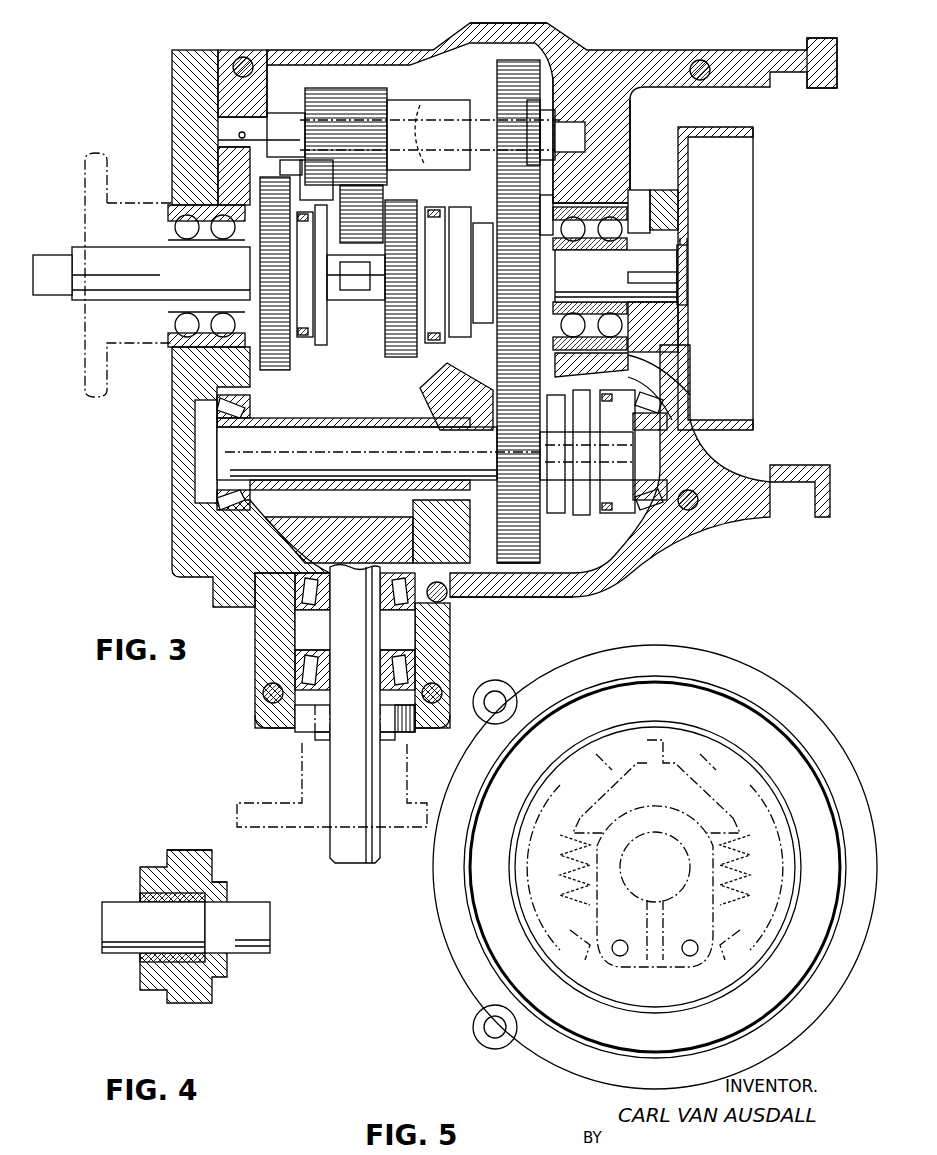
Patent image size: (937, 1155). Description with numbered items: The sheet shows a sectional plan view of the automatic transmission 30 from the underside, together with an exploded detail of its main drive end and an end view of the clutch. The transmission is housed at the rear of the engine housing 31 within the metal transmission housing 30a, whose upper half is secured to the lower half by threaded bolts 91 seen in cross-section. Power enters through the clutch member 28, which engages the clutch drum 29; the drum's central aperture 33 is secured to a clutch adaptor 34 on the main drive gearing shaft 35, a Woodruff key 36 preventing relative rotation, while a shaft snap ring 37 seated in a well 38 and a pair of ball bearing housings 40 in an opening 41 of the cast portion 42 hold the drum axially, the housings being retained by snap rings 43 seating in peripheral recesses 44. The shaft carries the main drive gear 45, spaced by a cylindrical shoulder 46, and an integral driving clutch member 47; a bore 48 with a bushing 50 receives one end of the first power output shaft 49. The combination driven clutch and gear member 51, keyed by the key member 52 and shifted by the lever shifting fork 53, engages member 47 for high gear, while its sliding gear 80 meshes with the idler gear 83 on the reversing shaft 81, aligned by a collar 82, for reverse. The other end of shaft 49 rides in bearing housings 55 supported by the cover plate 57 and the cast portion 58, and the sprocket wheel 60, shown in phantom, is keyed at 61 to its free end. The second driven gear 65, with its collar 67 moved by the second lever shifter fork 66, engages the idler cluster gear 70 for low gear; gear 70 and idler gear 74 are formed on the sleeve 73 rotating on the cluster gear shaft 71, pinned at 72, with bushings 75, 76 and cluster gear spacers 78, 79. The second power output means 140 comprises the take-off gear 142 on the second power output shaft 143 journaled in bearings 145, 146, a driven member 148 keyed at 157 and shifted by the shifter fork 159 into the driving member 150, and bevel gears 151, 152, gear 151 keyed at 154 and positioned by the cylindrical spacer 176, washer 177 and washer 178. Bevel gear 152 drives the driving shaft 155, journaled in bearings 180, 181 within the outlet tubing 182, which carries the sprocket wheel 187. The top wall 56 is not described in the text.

In FIG. 5, the clutch member 28 is at (612, 987).
In FIG. 3, the clutch drum 29 is at (738, 128).
In FIG. 5, the clutch drum 29 is at (545, 965).
In FIG. 3, the automatic transmission 30 is at (155, 574).
In FIG. 3, the transmission housing 30a is at (643, 40).
In FIG. 3, the engine housing 31 is at (820, 88).
In FIG. 3, the central aperture 33 is at (680, 322).
In FIG. 3, the clutch adaptor 34 is at (680, 366).
In FIG. 3, the main drive gearing shaft 35 is at (690, 270).
In FIG. 4, the main drive gearing shaft 35 is at (262, 918).
In FIG. 3, the Woodruff key 36 is at (690, 286).
In FIG. 3, the shaft snap ring 37 is at (690, 250).
In FIG. 3, the well 38 is at (688, 240).
In FIG. 3, the ball bearing housing 40 is at (622, 228).
In FIG. 3, the opening 41 is at (620, 362).
In FIG. 3, the cast portion 42 is at (630, 136).
In FIG. 3, the snap rings 43 is at (632, 200).
In FIG. 3, the peripheral recesses 44 is at (545, 205).
In FIG. 3, the main drive gear 45 is at (470, 215).
In FIG. 4, the main drive gear 45 is at (212, 870).
In FIG. 4, the cylindrical shoulder 46 is at (227, 885).
In FIG. 3, the driving clutch member 47 is at (478, 340).
In FIG. 4, the driving clutch member 47 is at (147, 865).
In FIG. 4, the bore 48 is at (140, 968).
In FIG. 3, the first power output shaft 49 is at (72, 250).
In FIG. 4, the first power output shaft 49 is at (102, 928).
In FIG. 4, the bushing 50 is at (140, 882).
In FIG. 3, the combination driven clutch and gear member 51 is at (375, 358).
In FIG. 3, the key member 52 is at (352, 300).
In FIG. 3, the lever shifting fork 53 is at (437, 207).
In FIG. 3, the bearing housings 55 is at (170, 228).
In FIG. 3, the top wall 56 is at (552, 113).
In FIG. 3, the cover plate 57 is at (172, 77).
In FIG. 3, the cast portion 58 is at (217, 180).
In FIG. 3, the sprocket wheel 60 is at (85, 343).
In FIG. 3, the key 61 is at (120, 272).
In FIG. 3, the second driven member or gear 65 is at (274, 370).
In FIG. 3, the second lever shifter fork 66 is at (305, 338).
In FIG. 3, the collar 67 is at (327, 338).
In FIG. 3, the idler cluster gear 70 is at (340, 88).
In FIG. 3, the cluster gear shaft 71 is at (630, 157).
In FIG. 3, the pin 72 is at (238, 135).
In FIG. 3, the sleeve 73 is at (431, 100).
In FIG. 3, the idler gear 74 is at (497, 75).
In FIG. 3, the bushing 75 is at (300, 100).
In FIG. 3, the bushing 76 is at (542, 110).
In FIG. 3, the cluster gear spacer 78 is at (290, 115).
In FIG. 3, the cluster gear spacer 79 is at (548, 110).
In FIG. 3, the sliding gear 80 is at (400, 357).
In FIG. 3, the reversing shaft 81 is at (428, 130).
In FIG. 3, the collar 82 is at (303, 162).
In FIG. 3, the idler gear 83 is at (350, 243).
In FIG. 3, the threaded bolts 91 is at (246, 57).
In FIG. 3, the second power output means 140 is at (566, 548).
In FIG. 3, the take-off gear 142 is at (520, 565).
In FIG. 3, the second power output shaft 143 is at (345, 427).
In FIG. 3, the bearing 145 is at (250, 495).
In FIG. 3, the bearing 146 is at (668, 540).
In FIG. 3, the driven member 148 is at (580, 515).
In FIG. 3, the driving member 150 is at (545, 445).
In FIG. 3, the bevel gear 151 is at (420, 405).
In FIG. 3, the bevel gear 152 is at (388, 525).
In FIG. 3, the key 154 is at (440, 452).
In FIG. 3, the driving shaft 155 is at (330, 843).
In FIG. 3, the key 157 is at (634, 442).
In FIG. 3, the shifter fork 159 is at (604, 515).
In FIG. 3, the cylindrical spacer 176 is at (325, 490).
In FIG. 3, the washer 177 is at (262, 418).
In FIG. 3, the washer 178 is at (482, 512).
In FIG. 3, the bearing 180 is at (290, 598).
In FIG. 3, the bearing 181 is at (295, 662).
In FIG. 3, the outlet tubing 182 is at (450, 640).
In FIG. 3, the sprocket wheel 187 is at (302, 790).